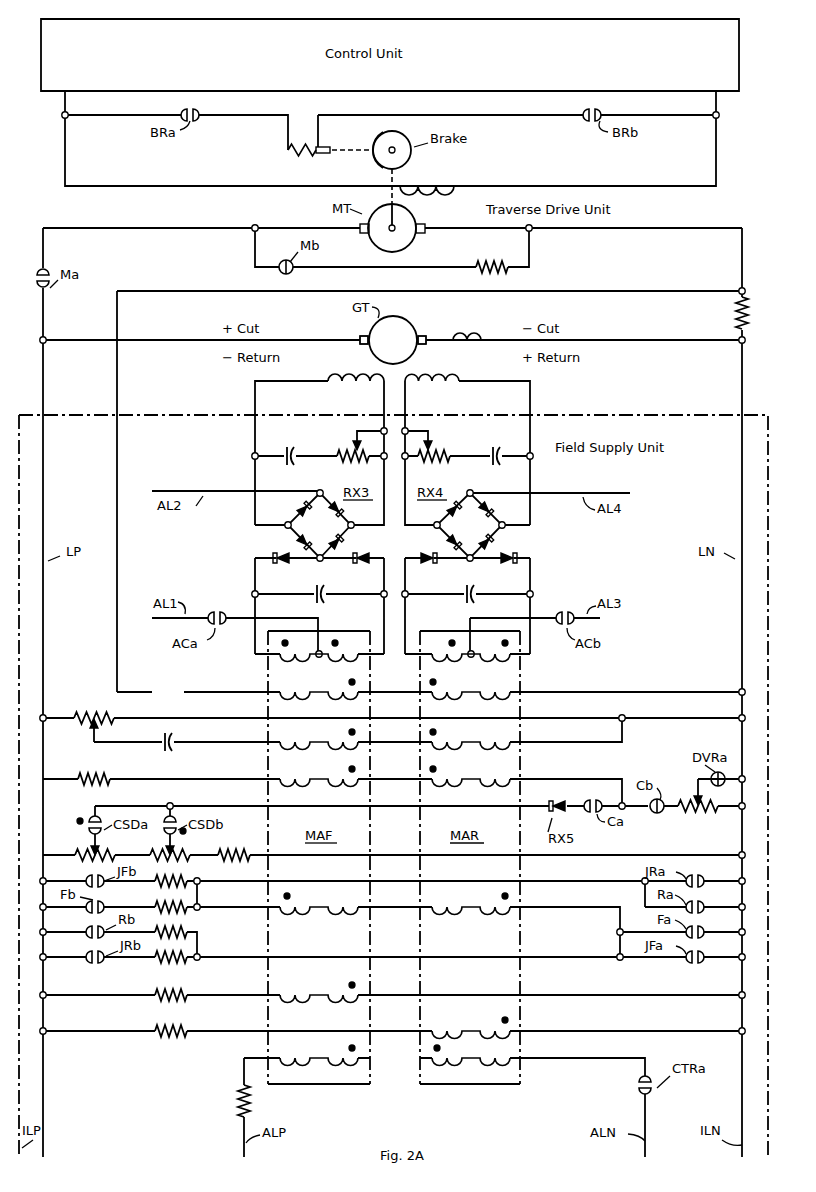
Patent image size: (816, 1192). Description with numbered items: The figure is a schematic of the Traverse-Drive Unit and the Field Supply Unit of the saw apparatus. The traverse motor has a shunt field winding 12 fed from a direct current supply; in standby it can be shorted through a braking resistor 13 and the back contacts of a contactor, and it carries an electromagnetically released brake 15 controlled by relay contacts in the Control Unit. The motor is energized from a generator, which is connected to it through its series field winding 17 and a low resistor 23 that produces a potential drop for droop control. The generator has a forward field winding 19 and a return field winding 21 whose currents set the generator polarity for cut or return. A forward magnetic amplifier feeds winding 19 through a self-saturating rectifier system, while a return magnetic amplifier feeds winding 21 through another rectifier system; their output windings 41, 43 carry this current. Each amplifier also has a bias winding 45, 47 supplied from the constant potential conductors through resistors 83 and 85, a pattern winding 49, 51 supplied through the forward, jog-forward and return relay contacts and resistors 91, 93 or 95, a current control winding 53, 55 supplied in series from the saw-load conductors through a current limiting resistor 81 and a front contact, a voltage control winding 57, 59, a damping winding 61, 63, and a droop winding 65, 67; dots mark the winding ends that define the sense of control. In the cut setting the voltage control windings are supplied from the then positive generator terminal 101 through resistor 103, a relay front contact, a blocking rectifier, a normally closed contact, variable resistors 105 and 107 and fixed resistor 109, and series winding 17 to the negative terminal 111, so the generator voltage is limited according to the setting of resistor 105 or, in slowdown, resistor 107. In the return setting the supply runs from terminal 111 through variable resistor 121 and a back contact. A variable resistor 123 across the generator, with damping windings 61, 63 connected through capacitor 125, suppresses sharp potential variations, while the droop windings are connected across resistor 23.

The shunt field winding 12 is at (437, 190).
The braking resistor 13 is at (481, 258).
The brake 15 is at (366, 140).
The series field winding 17 is at (466, 336).
The forward field winding 19 is at (360, 388).
The return field winding 21 is at (425, 385).
The low resistor 23 is at (735, 318).
The output winding 41 is at (328, 666).
The output winding 43 is at (468, 666).
The bias winding 45 is at (333, 993).
The bias winding 47 is at (488, 1033).
The pattern winding 49 is at (300, 916).
The pattern winding 51 is at (455, 916).
The current control winding 53 is at (295, 1065).
The current control winding 55 is at (445, 1065).
The voltage control winding 57 is at (338, 785).
The voltage control winding 59 is at (500, 785).
The damping winding 61 is at (335, 748).
The damping winding 63 is at (495, 750).
The droop winding 65 is at (342, 704).
The droop winding 67 is at (492, 704).
The current limiting resistor 81 is at (240, 1104).
The resistor 83 is at (163, 993).
The resistor 85 is at (163, 1028).
The resistor 91 is at (160, 905).
The resistor 93 is at (185, 880).
The resistor 95 is at (190, 928).
The generator terminal 101 is at (348, 333).
The resistor 103 is at (104, 778).
The variable resistor 105 is at (80, 848).
The variable resistor 107 is at (160, 848).
The fixed resistor 109 is at (228, 848).
The generator terminal 111 is at (428, 336).
The variable resistor 121 is at (695, 818).
The variable resistor 123 is at (96, 708).
The capacitor 125 is at (175, 744).